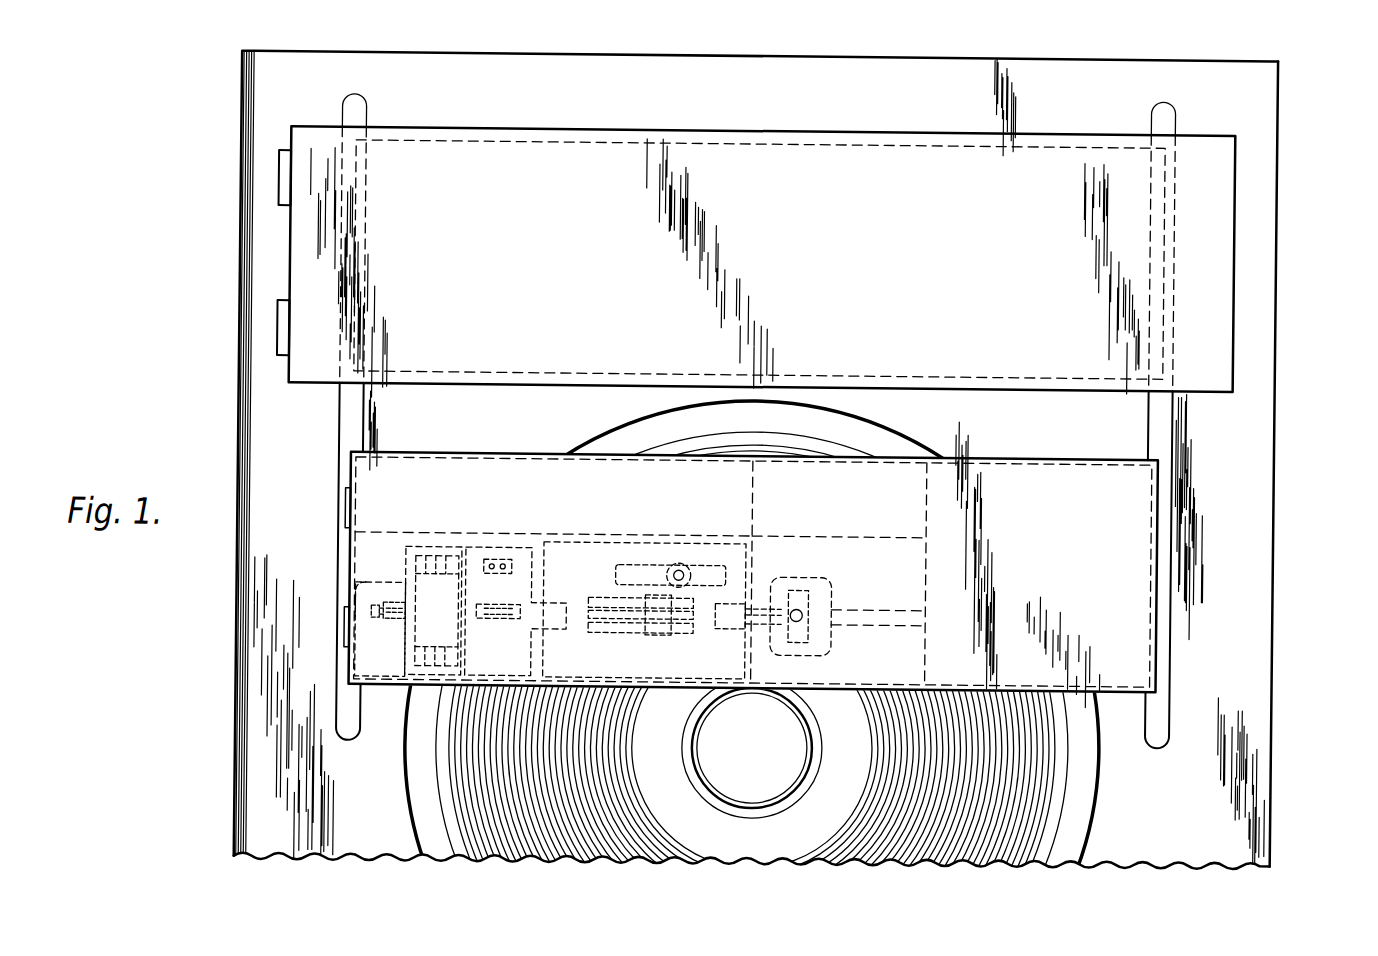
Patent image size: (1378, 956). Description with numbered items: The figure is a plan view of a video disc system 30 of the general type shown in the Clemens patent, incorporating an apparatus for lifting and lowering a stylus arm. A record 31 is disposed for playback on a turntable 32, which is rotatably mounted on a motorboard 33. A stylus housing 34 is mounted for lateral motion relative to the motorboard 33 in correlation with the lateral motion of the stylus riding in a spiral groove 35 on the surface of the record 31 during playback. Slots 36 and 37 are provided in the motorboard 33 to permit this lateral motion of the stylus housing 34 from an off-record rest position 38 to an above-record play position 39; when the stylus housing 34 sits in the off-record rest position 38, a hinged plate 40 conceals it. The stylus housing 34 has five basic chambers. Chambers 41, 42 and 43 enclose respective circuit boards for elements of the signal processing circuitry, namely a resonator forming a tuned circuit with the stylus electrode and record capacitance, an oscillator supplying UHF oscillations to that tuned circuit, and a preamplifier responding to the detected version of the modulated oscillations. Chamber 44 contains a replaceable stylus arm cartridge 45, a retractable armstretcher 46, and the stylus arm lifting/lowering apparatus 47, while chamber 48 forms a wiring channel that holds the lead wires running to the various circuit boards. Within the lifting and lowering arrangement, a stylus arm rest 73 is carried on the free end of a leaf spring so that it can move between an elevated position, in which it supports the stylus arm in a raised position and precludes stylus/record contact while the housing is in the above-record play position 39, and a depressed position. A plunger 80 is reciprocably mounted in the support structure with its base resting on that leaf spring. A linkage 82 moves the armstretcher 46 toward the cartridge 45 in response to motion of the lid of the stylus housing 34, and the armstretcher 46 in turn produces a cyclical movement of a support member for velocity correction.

The video disc system 30 is at (1290, 449).
The record 31 is at (1057, 787).
The turntable 32 is at (1070, 829).
The motorboard 33 is at (1260, 668).
The stylus housing 34 is at (475, 444).
The spiral groove 35 is at (483, 768).
The slot 36 is at (340, 425).
The slot 37 is at (1176, 427).
The off-record rest position 38 is at (456, 143).
The above-record play position 39 is at (556, 460).
The hinged plate 40 is at (543, 131).
The chamber 41 is at (904, 657).
The chamber 42 is at (1079, 572).
The chamber 43 is at (853, 497).
The chamber 44 is at (398, 576).
The stylus arm cartridge 45 is at (583, 574).
The armstretcher 46 is at (518, 666).
The stylus arm lifting/lowering apparatus 47 is at (645, 564).
The chamber 48 is at (497, 500).
The stylus arm rest 73 is at (626, 598).
The plunger 80 is at (680, 566).
The linkage 82 is at (400, 624).